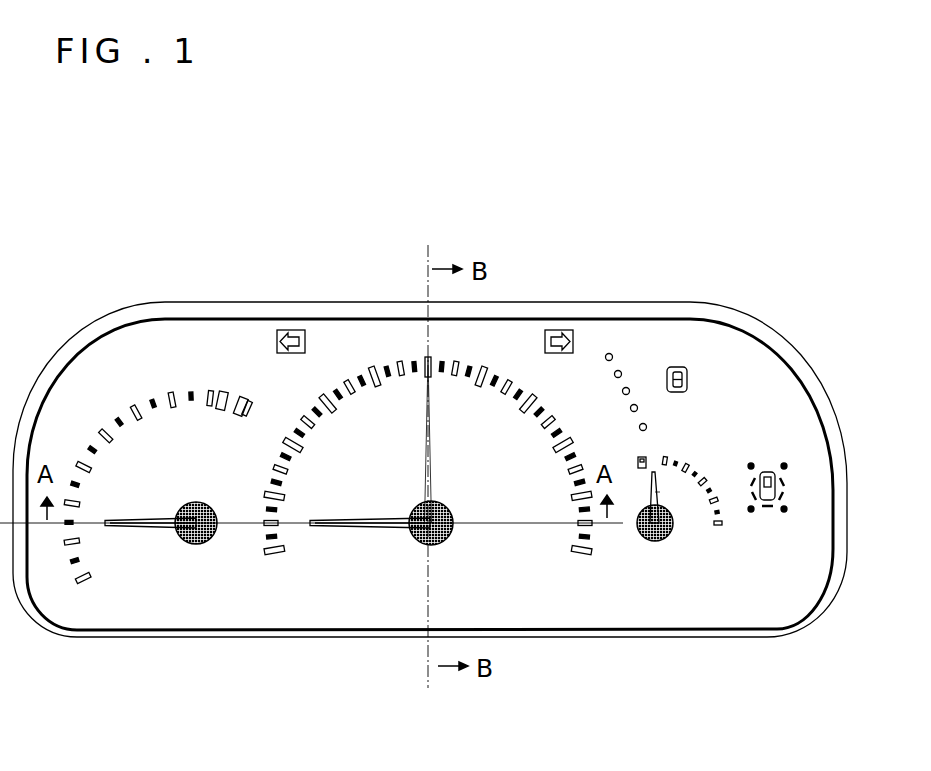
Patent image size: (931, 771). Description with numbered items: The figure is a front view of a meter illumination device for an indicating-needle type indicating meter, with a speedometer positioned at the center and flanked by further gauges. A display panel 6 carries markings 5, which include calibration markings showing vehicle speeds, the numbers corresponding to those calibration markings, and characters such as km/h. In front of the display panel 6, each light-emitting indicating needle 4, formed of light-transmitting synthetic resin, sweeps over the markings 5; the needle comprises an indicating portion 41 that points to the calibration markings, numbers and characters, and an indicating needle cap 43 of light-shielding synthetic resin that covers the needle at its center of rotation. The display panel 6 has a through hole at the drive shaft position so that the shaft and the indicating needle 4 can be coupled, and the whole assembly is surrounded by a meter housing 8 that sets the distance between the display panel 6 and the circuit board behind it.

The indicating needle 4 is at (404, 555).
The markings 5 is at (222, 387).
The display panel 6 is at (290, 597).
The meter housing 8 is at (607, 313).
The indicating portion 41 is at (150, 526).
The indicating needle cap 43 is at (195, 540).